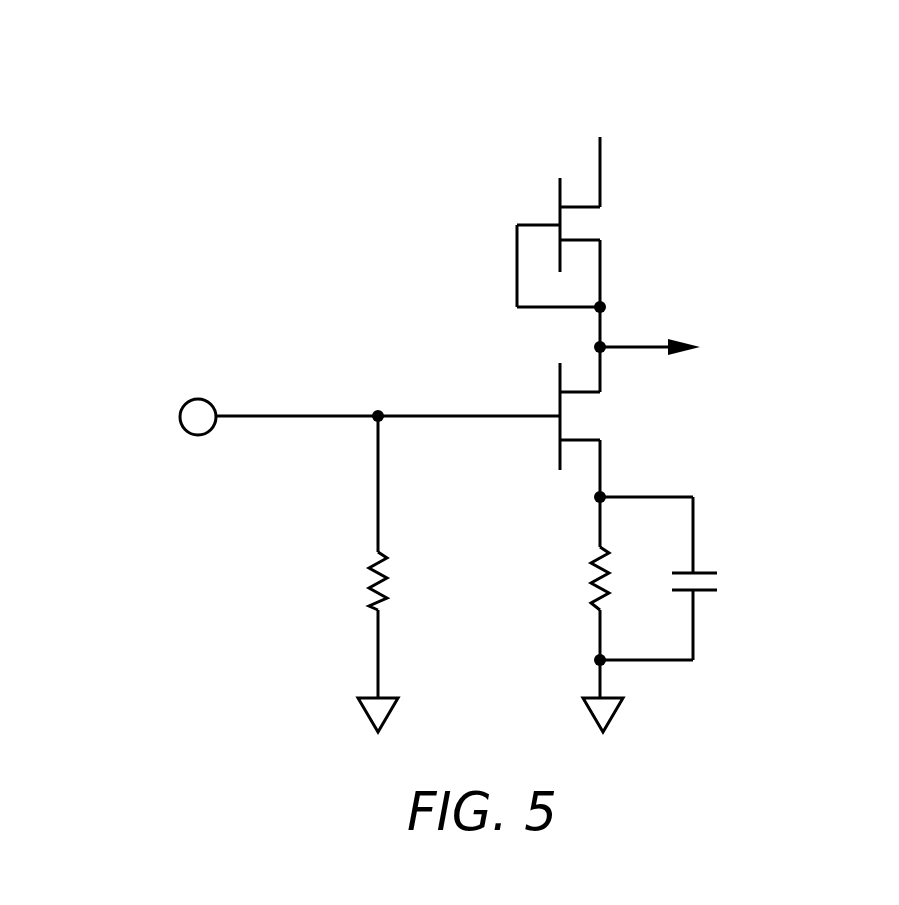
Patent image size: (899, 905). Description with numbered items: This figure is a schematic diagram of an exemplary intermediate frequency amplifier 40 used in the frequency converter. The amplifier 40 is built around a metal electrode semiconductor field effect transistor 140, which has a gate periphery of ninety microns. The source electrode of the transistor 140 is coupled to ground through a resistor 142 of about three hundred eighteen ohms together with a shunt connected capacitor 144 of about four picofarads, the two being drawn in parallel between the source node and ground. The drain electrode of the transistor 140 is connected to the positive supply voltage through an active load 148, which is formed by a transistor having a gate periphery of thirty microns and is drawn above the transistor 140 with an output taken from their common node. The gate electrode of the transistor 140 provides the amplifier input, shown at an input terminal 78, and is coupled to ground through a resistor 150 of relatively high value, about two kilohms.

The intermediate frequency amplifier 40 is at (782, 261).
The input terminal 78 is at (213, 399).
The metal electrode semiconductor field effect transistor 140 is at (580, 417).
The resistor 142 is at (590, 584).
The shunt connected capacitor 144 is at (708, 582).
The active load 148 is at (586, 225).
The resistor 150 is at (368, 586).